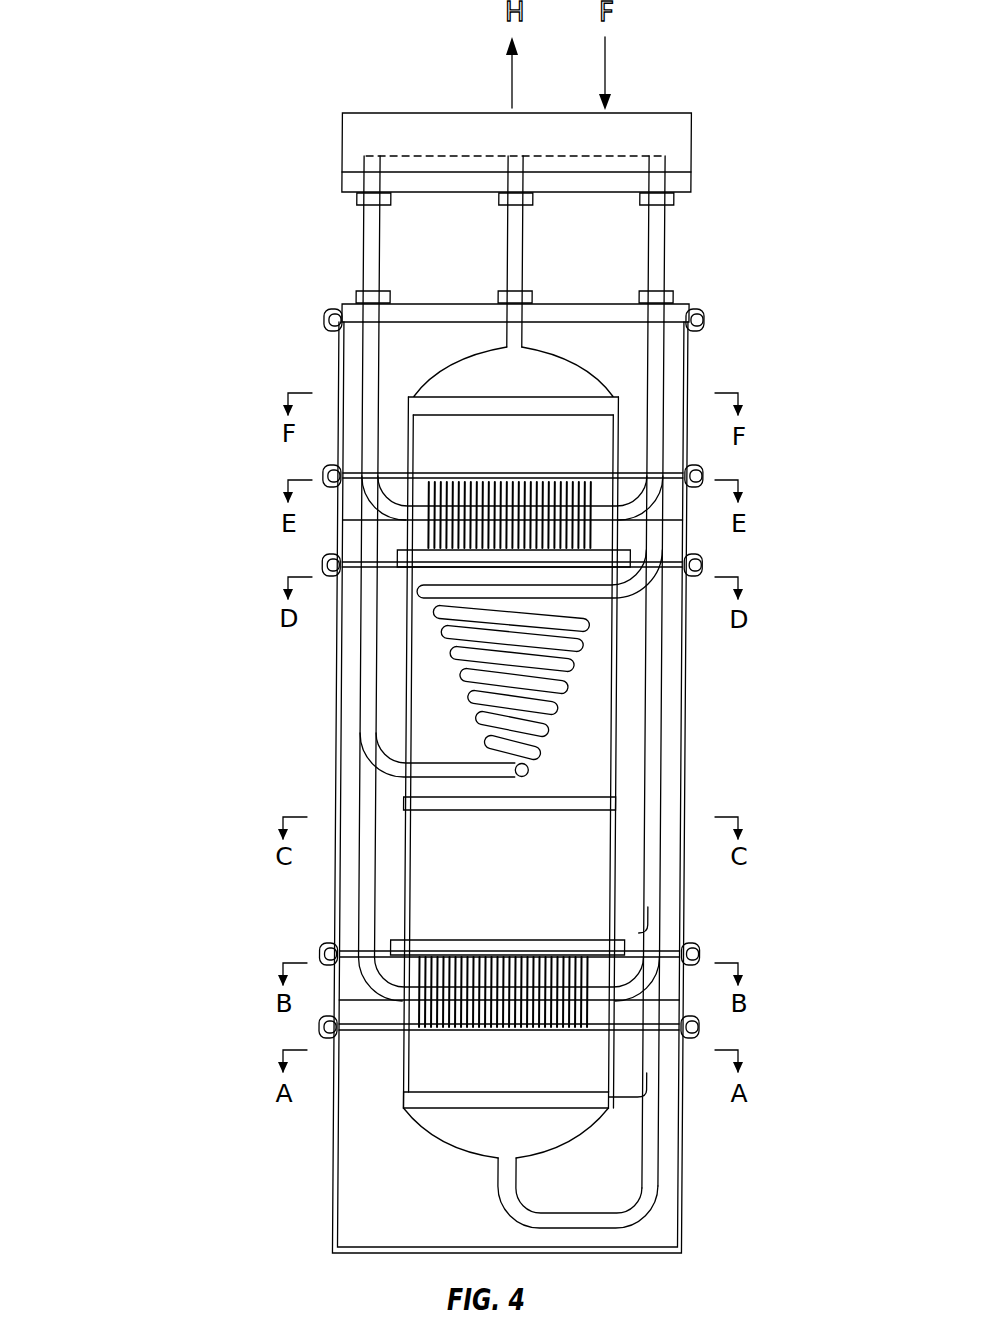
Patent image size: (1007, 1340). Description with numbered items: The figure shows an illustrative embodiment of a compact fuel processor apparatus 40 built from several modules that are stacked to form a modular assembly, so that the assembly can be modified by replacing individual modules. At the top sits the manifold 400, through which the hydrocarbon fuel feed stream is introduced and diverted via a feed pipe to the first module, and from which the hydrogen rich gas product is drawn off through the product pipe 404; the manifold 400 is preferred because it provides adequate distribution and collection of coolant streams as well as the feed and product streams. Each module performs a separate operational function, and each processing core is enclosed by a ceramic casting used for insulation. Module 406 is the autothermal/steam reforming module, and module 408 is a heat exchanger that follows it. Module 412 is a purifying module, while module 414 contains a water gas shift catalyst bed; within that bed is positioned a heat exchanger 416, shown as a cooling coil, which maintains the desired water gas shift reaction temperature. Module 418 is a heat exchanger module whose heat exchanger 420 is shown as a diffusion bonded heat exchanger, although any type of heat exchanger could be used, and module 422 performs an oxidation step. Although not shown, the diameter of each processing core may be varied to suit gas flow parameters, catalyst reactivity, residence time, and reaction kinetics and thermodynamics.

The apparatus 40 is at (114, 522).
The manifold 400 is at (688, 140).
The product pipe 404 is at (517, 248).
The autothermal/steam reforming module 406 is at (333, 1180).
The heat exchanger module 408 is at (333, 997).
The purifying module 412 is at (335, 888).
The water gas shift module 414 is at (338, 672).
The heat exchanger 416 is at (577, 688).
The heat exchanger module 418 is at (338, 527).
The heat exchanger 420 is at (596, 540).
The oxidation module 422 is at (338, 432).